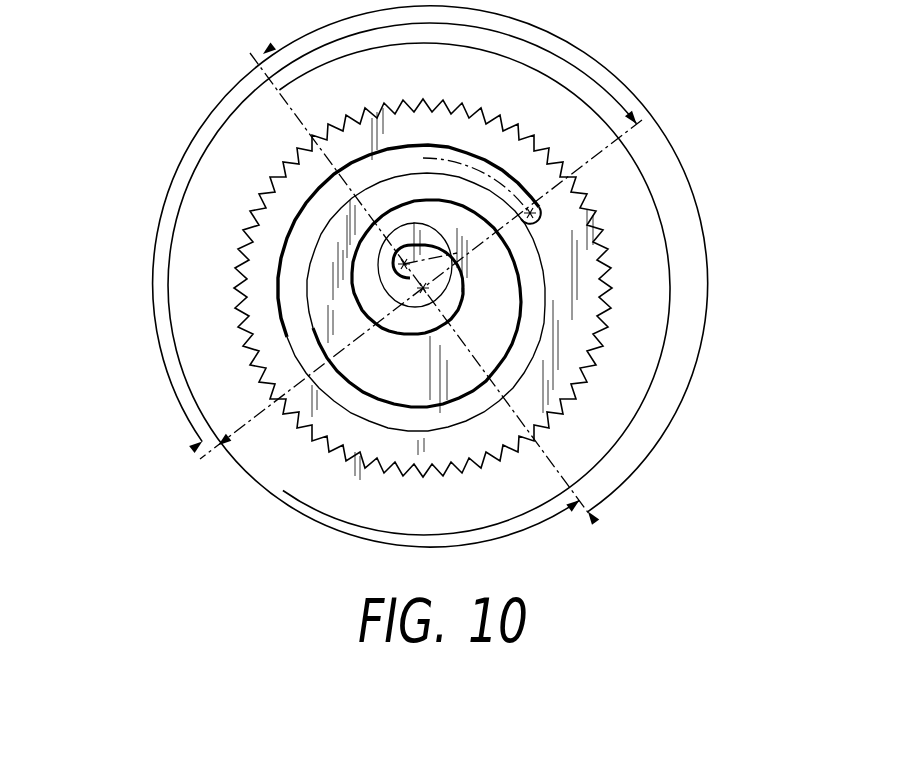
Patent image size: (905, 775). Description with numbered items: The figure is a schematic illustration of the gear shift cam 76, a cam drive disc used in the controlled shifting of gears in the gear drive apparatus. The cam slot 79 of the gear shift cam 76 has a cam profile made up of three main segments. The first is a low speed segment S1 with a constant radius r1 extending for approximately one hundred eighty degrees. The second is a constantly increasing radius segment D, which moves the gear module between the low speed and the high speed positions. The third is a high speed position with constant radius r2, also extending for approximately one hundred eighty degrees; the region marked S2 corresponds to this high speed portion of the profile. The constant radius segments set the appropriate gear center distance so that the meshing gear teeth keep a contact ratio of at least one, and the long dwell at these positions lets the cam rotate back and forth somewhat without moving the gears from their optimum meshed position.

The low speed segment S1 is at (688, 185).
The clearance gap S2 is at (167, 197).
The constantly increasing radius segment D is at (456, 533).
The gear shift cam 76 is at (256, 378).
The cam slot 79 is at (396, 423).
The constant radius of low speed segment r1 is at (423, 288).
The constant radius of high speed segment r2 is at (423, 288).